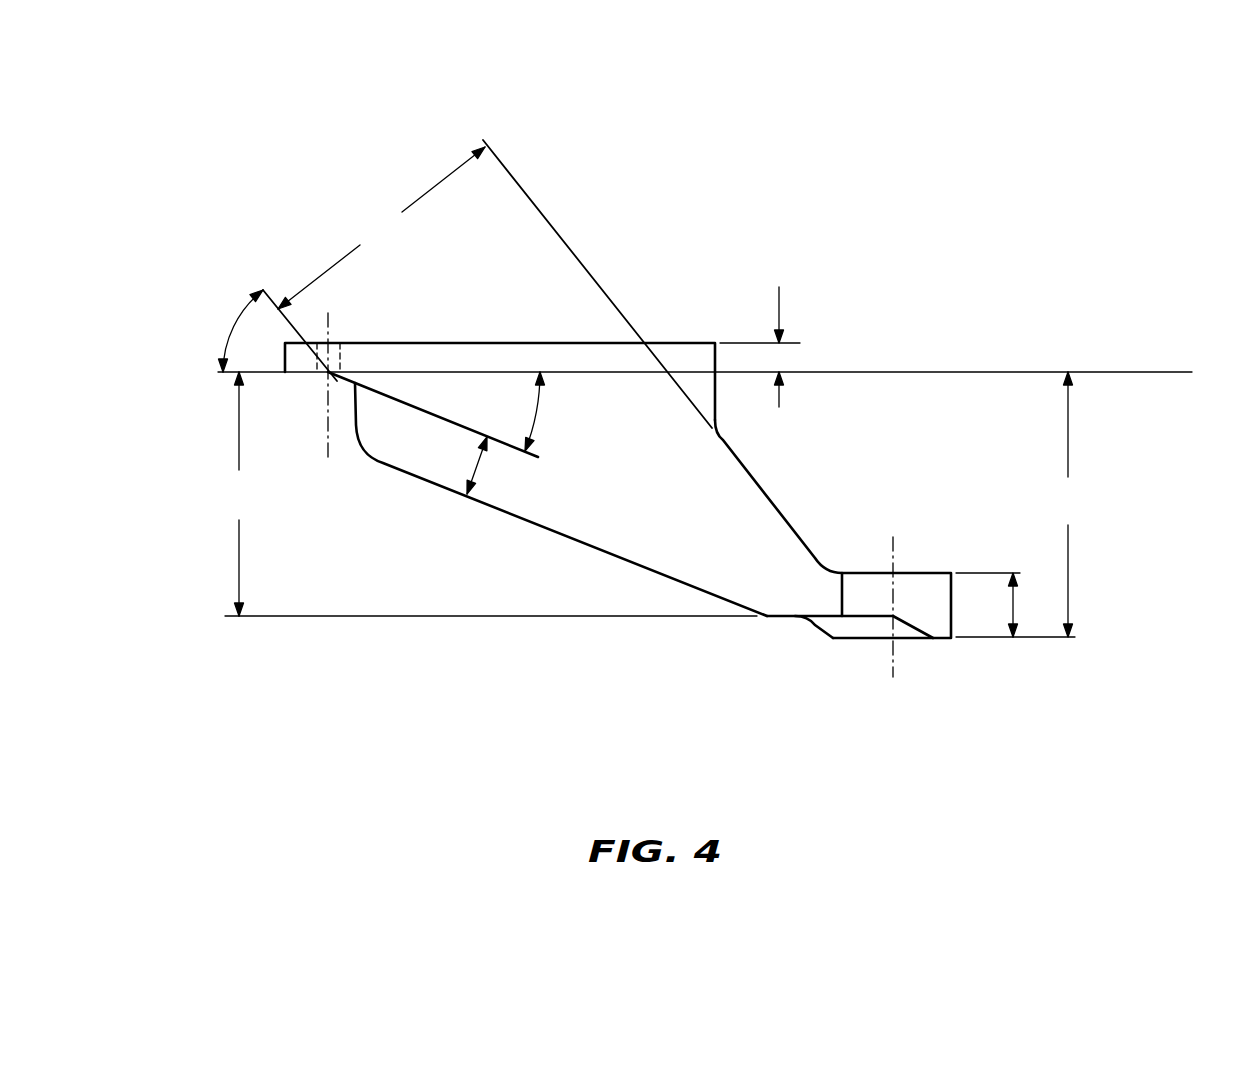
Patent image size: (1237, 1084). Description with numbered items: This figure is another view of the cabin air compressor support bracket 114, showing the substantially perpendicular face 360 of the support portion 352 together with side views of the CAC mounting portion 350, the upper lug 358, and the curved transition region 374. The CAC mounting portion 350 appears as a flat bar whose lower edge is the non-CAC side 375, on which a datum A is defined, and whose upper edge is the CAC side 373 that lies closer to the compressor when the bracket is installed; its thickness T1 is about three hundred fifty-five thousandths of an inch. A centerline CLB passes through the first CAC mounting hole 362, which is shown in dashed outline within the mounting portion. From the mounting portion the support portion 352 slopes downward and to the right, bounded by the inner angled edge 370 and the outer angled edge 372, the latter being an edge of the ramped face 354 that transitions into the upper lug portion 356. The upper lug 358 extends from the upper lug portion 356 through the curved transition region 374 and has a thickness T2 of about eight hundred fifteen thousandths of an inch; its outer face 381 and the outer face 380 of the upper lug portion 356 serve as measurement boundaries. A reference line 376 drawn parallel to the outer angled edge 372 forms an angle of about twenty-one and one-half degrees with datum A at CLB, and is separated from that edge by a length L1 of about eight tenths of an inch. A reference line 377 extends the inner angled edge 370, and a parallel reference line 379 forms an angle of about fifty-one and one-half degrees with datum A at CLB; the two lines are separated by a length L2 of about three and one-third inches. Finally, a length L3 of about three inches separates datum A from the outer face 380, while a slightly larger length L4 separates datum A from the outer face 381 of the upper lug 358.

The second CAC support bracket 114 is at (513, 722).
The CAC mounting portion 350 is at (678, 352).
The support portion 352 is at (750, 598).
The ramped face 354 is at (713, 585).
The upper lug portion 356 is at (780, 609).
The upper lug 358 is at (937, 625).
The substantially perpendicular face 360 is at (557, 512).
The first CAC mounting hole 362 is at (336, 345).
The inner angled edge 370 is at (792, 527).
The outer angled edge 372 is at (625, 562).
The CAC side 373 is at (743, 342).
The curved transition region 374 is at (878, 635).
The non-CAC side 375 is at (750, 373).
The reference line 376 is at (410, 405).
The reference line 377 is at (540, 205).
The reference line 379 is at (268, 288).
The outer face 380 is at (793, 618).
The outer face 381 is at (938, 637).
The datum A is at (1167, 374).
The centerline B CLB is at (328, 445).
The length L1 is at (495, 465).
The length L2 is at (381, 228).
The length L3 is at (241, 494).
The length L4 is at (1022, 504).
The thickness T1 is at (762, 328).
The thickness T2 is at (1006, 605).